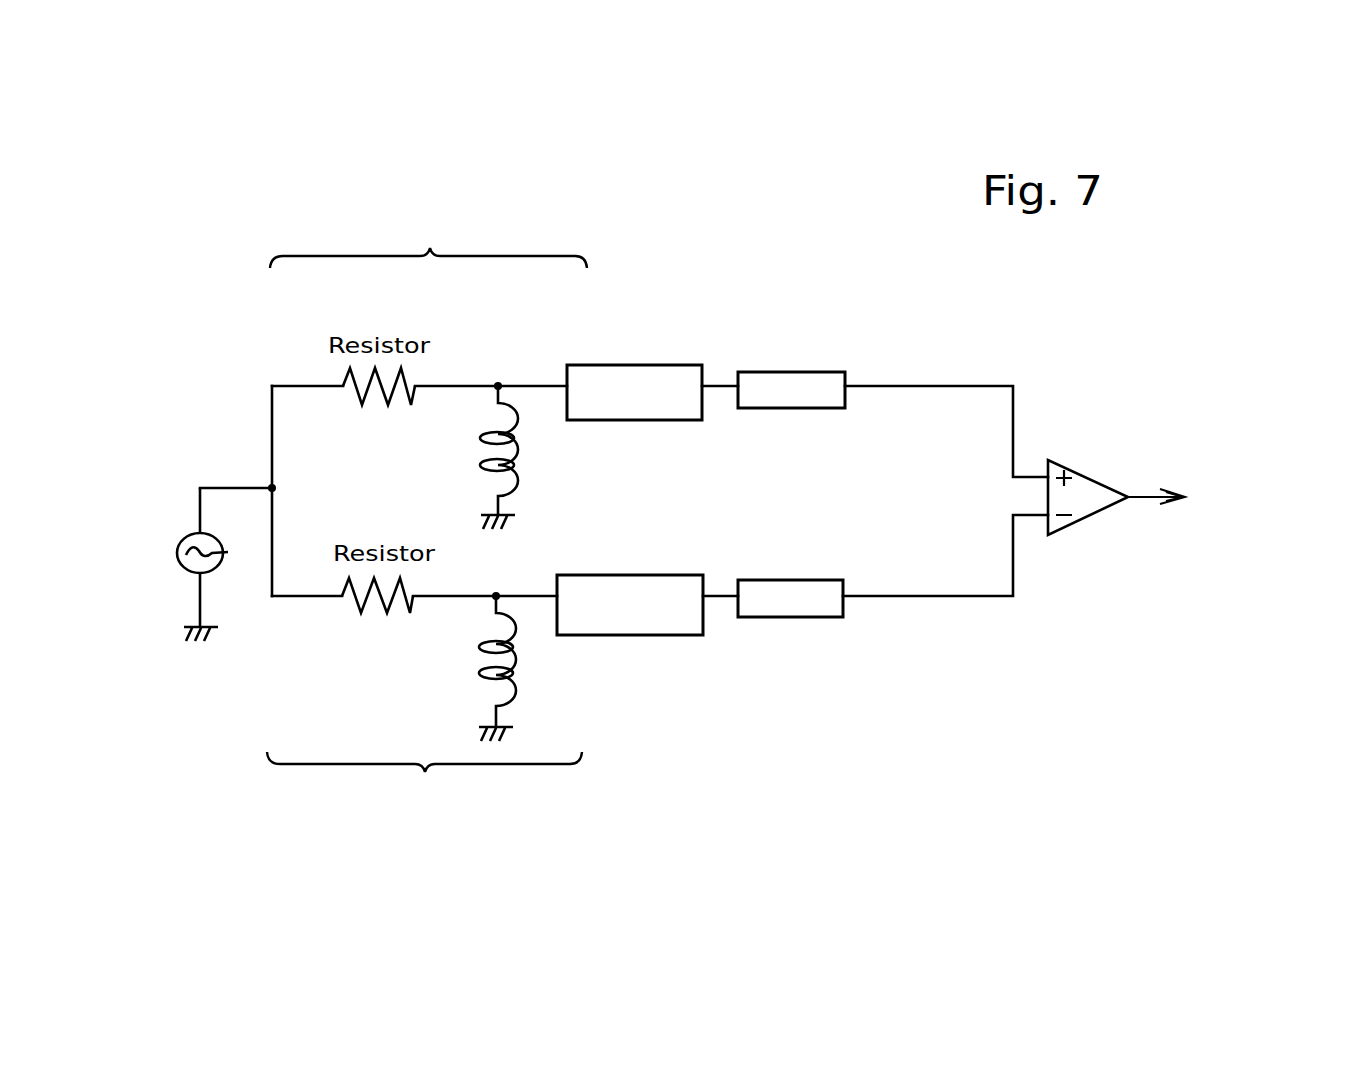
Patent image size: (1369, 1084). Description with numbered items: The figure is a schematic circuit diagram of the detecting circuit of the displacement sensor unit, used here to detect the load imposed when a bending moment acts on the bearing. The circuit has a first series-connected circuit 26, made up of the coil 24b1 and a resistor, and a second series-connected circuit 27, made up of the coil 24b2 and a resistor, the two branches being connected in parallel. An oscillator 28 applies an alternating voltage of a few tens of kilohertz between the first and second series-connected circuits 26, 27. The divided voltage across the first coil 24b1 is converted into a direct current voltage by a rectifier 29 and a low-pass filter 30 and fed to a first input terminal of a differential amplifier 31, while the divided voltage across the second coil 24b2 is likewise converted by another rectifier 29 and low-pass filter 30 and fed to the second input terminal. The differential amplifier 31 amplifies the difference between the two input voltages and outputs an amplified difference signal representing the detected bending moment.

The first series-connected circuit 26 is at (428, 237).
The second series-connected circuit 27 is at (424, 782).
The coil 24b1 is at (482, 437).
The coil 24b2 is at (478, 648).
The oscillator 28 is at (182, 535).
The rectifier 29 is at (650, 364).
The low-pass filter 30 is at (805, 372).
The differential amplifier 31 is at (1087, 502).